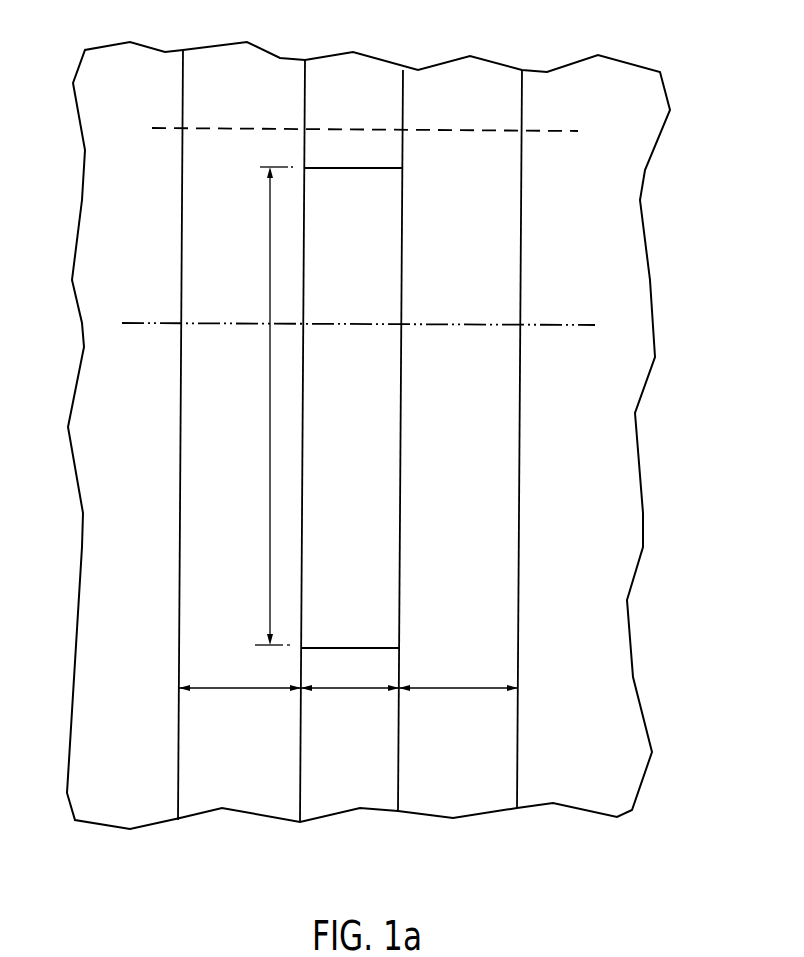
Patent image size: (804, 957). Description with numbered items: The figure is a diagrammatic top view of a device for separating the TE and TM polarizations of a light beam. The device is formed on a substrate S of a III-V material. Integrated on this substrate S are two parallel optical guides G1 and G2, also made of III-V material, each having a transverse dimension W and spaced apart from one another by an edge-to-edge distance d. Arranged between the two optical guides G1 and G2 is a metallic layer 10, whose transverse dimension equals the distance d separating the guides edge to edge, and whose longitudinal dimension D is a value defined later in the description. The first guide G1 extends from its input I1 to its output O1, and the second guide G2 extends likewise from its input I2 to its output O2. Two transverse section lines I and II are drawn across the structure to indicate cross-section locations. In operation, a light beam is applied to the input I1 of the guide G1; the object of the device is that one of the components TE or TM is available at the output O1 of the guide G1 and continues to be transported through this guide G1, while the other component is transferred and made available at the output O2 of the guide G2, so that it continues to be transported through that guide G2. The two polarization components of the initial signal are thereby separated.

The substrate S is at (647, 108).
The metallic layer 10 is at (364, 175).
The first optical guide G1 is at (197, 572).
The second optical guide G2 is at (497, 572).
The output of the first guide O1 is at (272, 66).
The output of the second guide O2 is at (449, 82).
The input of the first guide I1 is at (262, 798).
The input of the second guide I2 is at (453, 788).
The section line I- I is at (360, 326).
The section line II- II is at (369, 130).
The longitudinal dimension of the metallic layer D is at (269, 406).
The transverse dimension of the optical guides W is at (348, 707).
The edge-to-edge distance between the guides d is at (350, 708).